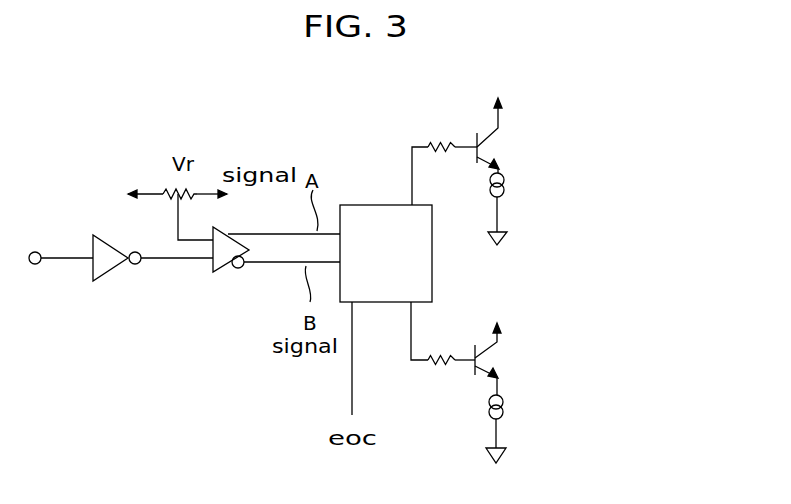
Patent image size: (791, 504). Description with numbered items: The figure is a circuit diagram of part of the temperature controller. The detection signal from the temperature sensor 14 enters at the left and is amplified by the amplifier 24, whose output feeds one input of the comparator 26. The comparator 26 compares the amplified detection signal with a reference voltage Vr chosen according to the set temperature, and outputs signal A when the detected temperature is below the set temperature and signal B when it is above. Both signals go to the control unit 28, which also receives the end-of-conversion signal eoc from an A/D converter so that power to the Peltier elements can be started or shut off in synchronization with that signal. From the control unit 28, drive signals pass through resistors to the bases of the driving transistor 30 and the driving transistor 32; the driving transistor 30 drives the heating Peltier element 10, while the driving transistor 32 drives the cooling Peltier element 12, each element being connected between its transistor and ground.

The temperature sensor 14 is at (38, 251).
The amplifier 24 is at (91, 272).
The comparator 26 is at (214, 270).
The control unit 28 is at (387, 204).
The driving transistor 30 is at (503, 145).
The heating Peltier element 10 is at (505, 190).
The driving transistor 32 is at (502, 358).
The cooling Peltier element 12 is at (503, 410).